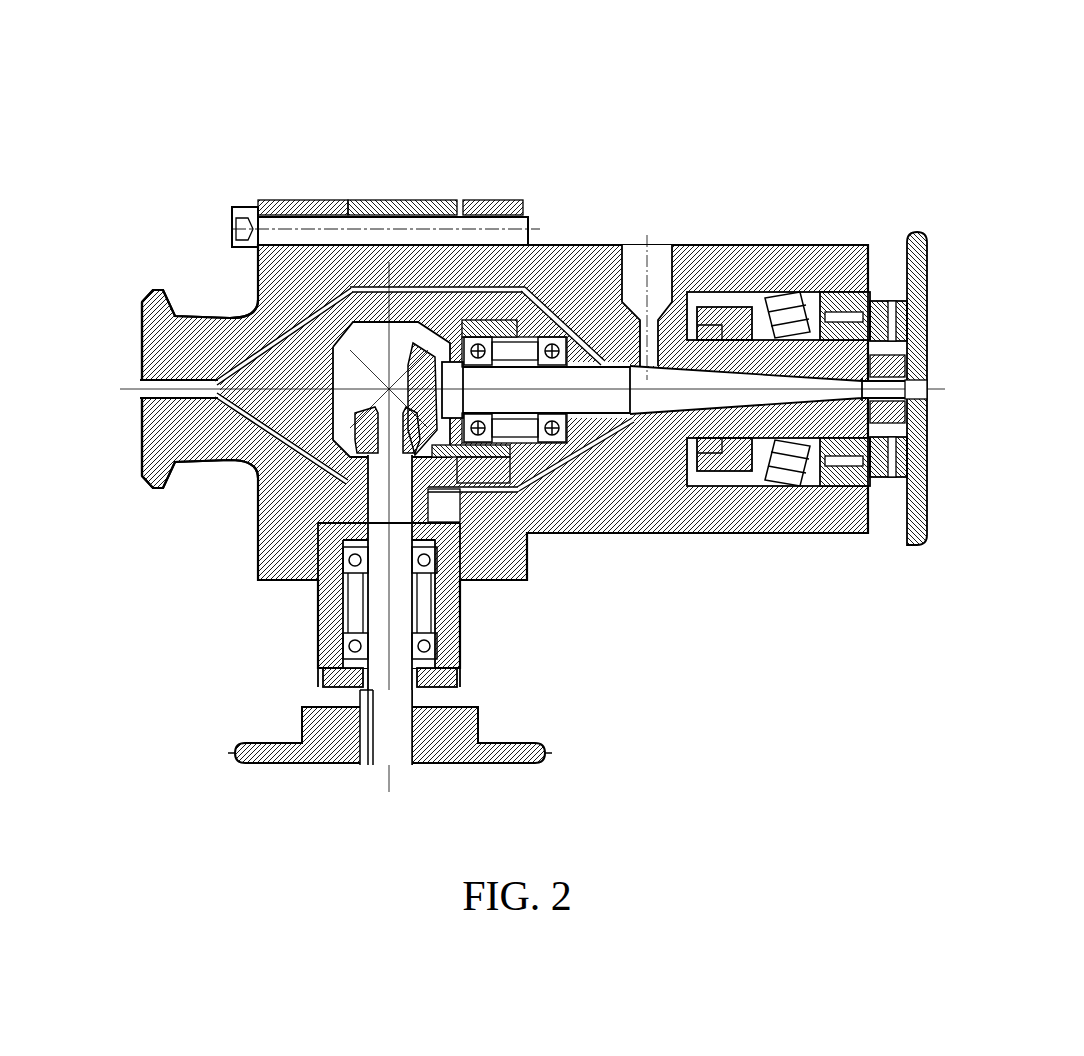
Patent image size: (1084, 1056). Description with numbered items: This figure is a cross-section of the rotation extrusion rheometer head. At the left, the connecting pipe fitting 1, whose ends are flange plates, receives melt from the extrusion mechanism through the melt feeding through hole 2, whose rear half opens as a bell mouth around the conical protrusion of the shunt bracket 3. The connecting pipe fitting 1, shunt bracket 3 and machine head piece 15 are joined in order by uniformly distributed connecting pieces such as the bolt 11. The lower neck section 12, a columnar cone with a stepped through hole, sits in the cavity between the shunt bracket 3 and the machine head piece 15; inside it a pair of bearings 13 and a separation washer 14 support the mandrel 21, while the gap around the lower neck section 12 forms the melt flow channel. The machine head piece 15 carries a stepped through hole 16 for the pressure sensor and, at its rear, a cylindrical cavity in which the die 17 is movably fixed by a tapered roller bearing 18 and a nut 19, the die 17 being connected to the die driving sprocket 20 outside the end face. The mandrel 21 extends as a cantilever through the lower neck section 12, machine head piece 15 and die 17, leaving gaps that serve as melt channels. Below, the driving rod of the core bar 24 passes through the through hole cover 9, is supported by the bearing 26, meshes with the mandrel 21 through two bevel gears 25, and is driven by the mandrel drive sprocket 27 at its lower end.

The connecting pipe fitting 1 is at (153, 325).
The melt feeding through hole 2 is at (150, 390).
The shunt bracket 3 is at (278, 388).
The through hole cover 9 is at (453, 690).
The bolt 11 is at (268, 215).
The lower neck section 12 is at (540, 325).
The bearings 13 is at (548, 355).
The separation washer 14 is at (523, 450).
The machine head piece 15 is at (585, 243).
The stepped through hole 16 is at (636, 250).
The die 17 is at (757, 360).
The tapered roller bearing 18 is at (782, 476).
The nut 19 is at (860, 476).
The die driving sprocket 20 is at (912, 238).
The mandrel 21 is at (855, 382).
The driving rod of the core bar 24 is at (380, 495).
The bevel gear 25 is at (430, 487).
The bearing 26 is at (340, 645).
The mandrel drive sprocket 27 is at (283, 760).